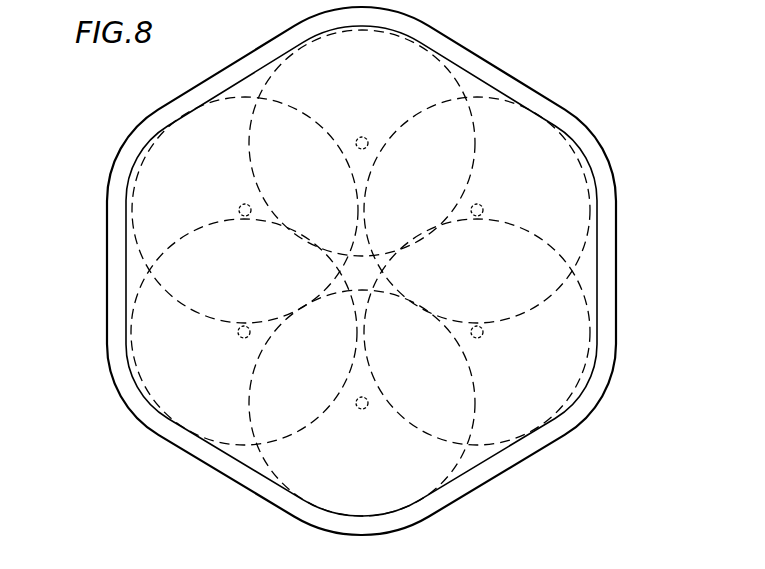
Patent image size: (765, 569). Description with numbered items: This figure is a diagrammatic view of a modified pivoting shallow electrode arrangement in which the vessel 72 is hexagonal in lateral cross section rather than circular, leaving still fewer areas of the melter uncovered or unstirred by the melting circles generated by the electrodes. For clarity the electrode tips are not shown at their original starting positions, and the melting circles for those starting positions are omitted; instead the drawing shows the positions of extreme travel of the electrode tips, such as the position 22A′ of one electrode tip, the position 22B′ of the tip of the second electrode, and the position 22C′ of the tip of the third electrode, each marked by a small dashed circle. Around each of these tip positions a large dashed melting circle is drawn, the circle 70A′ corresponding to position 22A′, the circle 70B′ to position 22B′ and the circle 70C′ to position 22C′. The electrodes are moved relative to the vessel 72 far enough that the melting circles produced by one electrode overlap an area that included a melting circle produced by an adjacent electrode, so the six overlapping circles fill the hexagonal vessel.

The vessel 72 is at (493, 72).
The melting circle 70B′ is at (270, 75).
The melting circle 70A′ is at (583, 295).
The melting circle 70C′ is at (238, 445).
The electrode tip position 22B′ is at (370, 132).
The electrode tip position 22A′ is at (485, 337).
The electrode tip position 22C′ is at (238, 337).